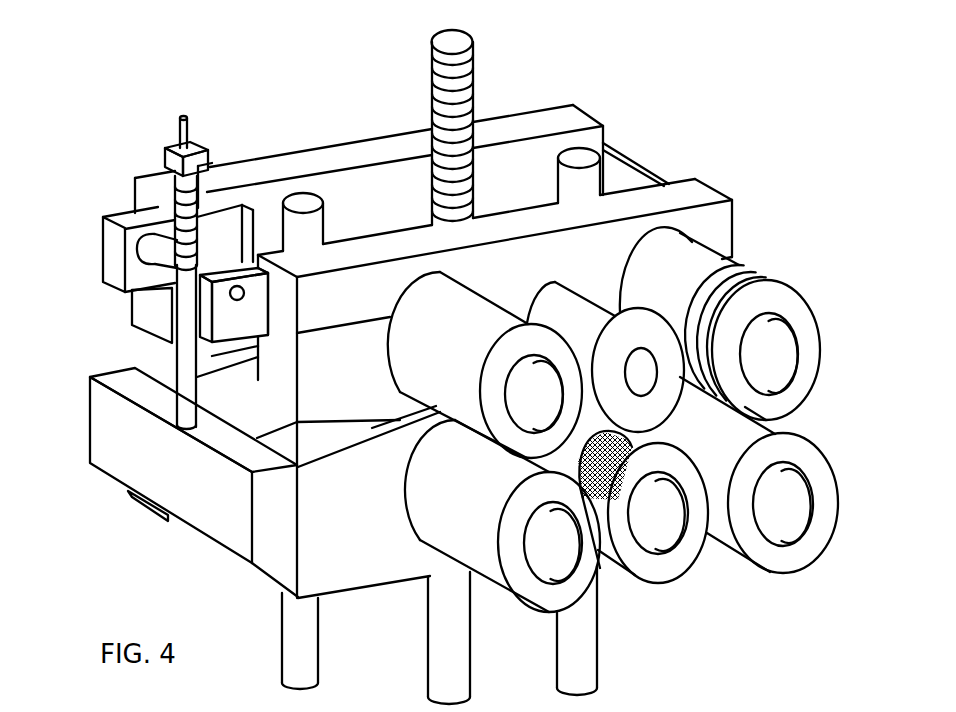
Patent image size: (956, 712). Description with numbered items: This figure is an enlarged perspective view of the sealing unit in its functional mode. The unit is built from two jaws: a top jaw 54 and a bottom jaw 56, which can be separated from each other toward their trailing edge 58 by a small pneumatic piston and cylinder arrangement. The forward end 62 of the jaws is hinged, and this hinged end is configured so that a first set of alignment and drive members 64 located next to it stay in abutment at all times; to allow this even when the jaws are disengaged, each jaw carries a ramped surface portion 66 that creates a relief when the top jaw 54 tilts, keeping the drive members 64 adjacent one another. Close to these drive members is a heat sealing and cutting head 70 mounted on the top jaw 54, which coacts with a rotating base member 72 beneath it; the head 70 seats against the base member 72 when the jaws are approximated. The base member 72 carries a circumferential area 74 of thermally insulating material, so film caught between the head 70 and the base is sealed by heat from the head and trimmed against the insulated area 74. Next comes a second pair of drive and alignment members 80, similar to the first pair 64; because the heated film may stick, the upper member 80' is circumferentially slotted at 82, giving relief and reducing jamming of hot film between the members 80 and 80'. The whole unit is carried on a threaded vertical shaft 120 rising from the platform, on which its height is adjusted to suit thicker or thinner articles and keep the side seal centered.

The top jaw 54 is at (738, 215).
The bottom jaw 56 is at (375, 598).
The trailing edge 58 is at (733, 235).
The forward end 62 is at (105, 505).
The first set of alignment and drive members 64 is at (515, 613).
The ramped surface portion 66 is at (328, 432).
The heat sealing and cutting head 70 is at (652, 300).
The rotating base member 72 is at (678, 562).
The circumferential area 74 is at (600, 562).
The second pair of drive and alignment members 80 is at (759, 502).
The upper member 80' is at (791, 346).
The circumferential slot 82 is at (737, 266).
The threaded vertical shaft 120 is at (462, 100).